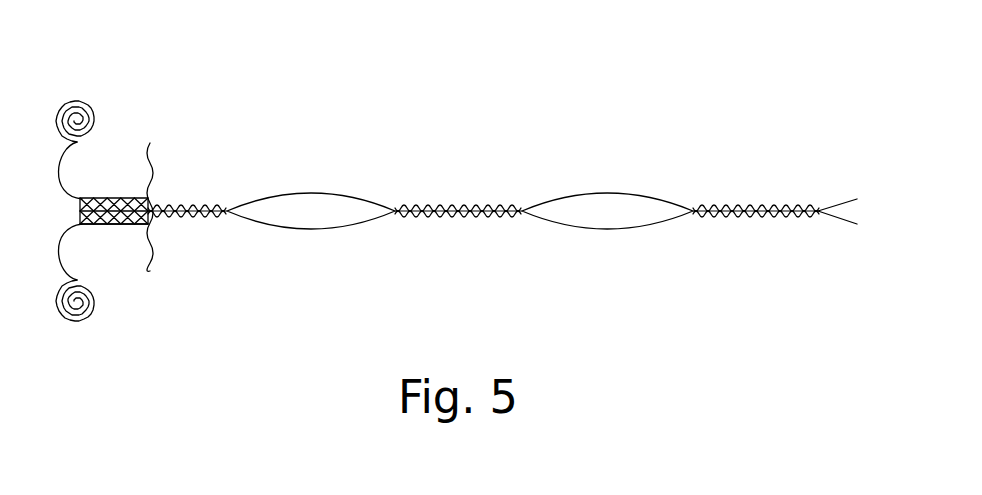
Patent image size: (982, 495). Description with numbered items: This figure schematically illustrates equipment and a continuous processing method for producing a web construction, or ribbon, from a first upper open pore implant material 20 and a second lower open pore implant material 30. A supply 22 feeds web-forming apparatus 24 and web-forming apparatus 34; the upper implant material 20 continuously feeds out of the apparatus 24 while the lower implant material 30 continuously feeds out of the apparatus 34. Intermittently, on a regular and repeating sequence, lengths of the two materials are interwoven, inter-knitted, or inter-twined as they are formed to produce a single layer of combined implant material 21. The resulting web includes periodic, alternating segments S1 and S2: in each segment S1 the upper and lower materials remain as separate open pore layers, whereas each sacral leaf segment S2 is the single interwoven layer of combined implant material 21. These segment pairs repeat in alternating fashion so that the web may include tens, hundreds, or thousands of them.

The upper open pore implant material 20 is at (176, 206).
The combined implant material 21 is at (224, 233).
The supply 22 is at (99, 78).
The web-forming apparatus 24 is at (97, 198).
The lower open pore implant material 30 is at (180, 215).
The web-forming apparatus 34 is at (95, 226).
The segment S1 is at (262, 198).
The sacral leaf segment S2 is at (418, 206).